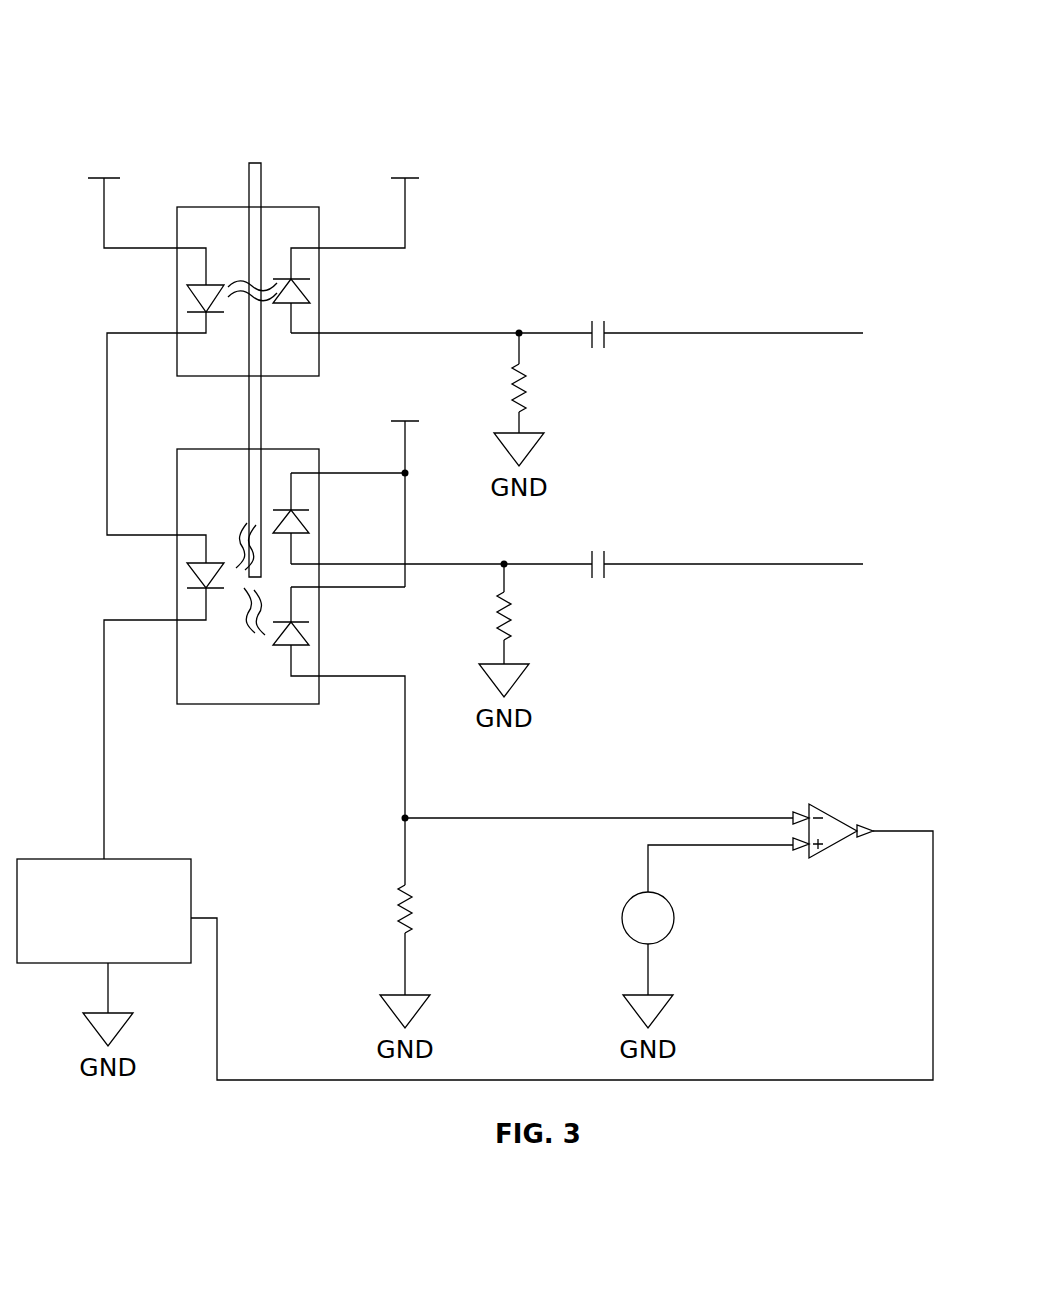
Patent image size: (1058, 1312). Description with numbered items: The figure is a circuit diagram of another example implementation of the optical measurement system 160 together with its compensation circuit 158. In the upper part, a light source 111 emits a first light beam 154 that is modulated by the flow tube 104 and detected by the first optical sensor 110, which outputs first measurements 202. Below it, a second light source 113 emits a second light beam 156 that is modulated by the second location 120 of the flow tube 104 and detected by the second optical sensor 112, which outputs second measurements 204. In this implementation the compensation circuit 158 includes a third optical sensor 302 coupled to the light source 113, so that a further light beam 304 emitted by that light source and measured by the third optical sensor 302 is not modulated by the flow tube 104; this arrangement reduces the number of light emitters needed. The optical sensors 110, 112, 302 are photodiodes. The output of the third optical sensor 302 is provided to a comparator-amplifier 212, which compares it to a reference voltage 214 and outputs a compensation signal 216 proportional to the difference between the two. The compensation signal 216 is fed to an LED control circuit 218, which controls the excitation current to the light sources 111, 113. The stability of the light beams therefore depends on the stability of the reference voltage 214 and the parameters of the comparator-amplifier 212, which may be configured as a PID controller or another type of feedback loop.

The optical measurement system 160 is at (134, 43).
The flow tube 104 is at (249, 183).
The second location 120 is at (256, 488).
The first optical sensor 110 is at (310, 300).
The light source 111 is at (190, 295).
The first light beam 154 is at (244, 292).
The second light beam 156 is at (240, 540).
The light source 113 is at (190, 573).
The second optical sensor 112 is at (302, 525).
The third optical sensor 302 is at (302, 635).
The light beam 304 is at (247, 617).
The first measurements 202 is at (780, 326).
The second measurements 204 is at (780, 555).
The compensation circuit 158 is at (818, 694).
The comparator-amplifier 212 is at (818, 806).
The reference voltage 214 is at (622, 923).
The compensation signal 216 is at (891, 830).
The LED control circuit 218 is at (88, 859).